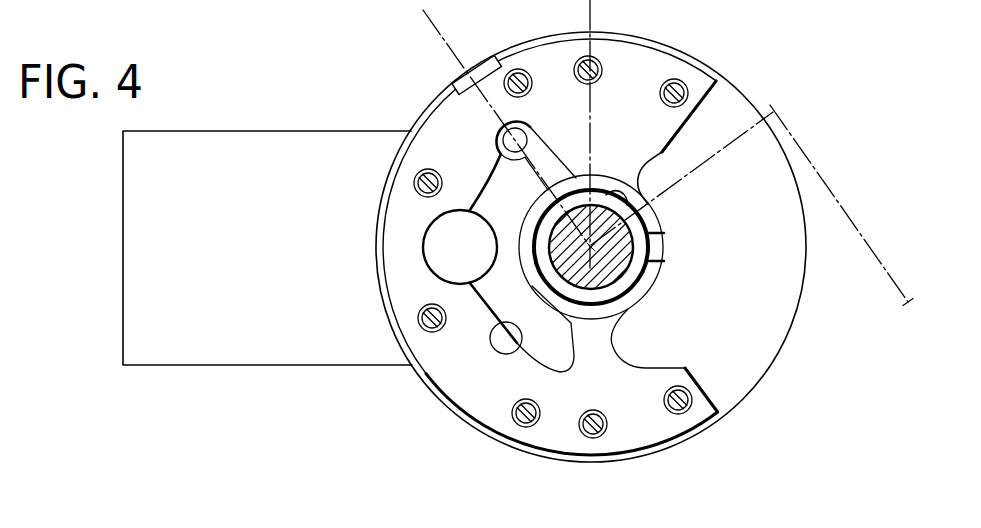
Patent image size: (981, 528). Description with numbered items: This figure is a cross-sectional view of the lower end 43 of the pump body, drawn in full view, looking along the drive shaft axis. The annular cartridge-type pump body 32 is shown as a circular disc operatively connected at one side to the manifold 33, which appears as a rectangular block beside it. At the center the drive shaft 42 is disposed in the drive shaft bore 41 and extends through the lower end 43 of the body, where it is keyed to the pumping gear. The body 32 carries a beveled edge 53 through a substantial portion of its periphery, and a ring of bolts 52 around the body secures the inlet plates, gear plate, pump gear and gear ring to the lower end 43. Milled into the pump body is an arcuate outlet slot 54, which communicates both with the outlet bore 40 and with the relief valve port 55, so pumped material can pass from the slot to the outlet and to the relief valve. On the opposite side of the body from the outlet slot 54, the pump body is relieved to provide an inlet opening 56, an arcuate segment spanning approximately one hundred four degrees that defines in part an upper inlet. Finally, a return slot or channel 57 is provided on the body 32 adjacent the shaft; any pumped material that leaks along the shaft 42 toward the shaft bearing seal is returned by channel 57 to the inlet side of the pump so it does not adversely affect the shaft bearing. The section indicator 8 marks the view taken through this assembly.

The section line 8-8 indicators 8 is at (452, 20).
The pump body 32 is at (425, 382).
The manifold 33 is at (123, 234).
The outlet bore 40 is at (432, 267).
The drive shaft bore 41 is at (628, 208).
The drive shaft 42 is at (602, 275).
The lower end 43 is at (637, 70).
The bolts 52 is at (484, 124).
The beveled edge 53 is at (468, 420).
The arcuate outlet slot 54 is at (513, 350).
The relief valve port 55 is at (496, 136).
The inlet opening 56 is at (697, 382).
The return slot or channel 57 is at (655, 249).